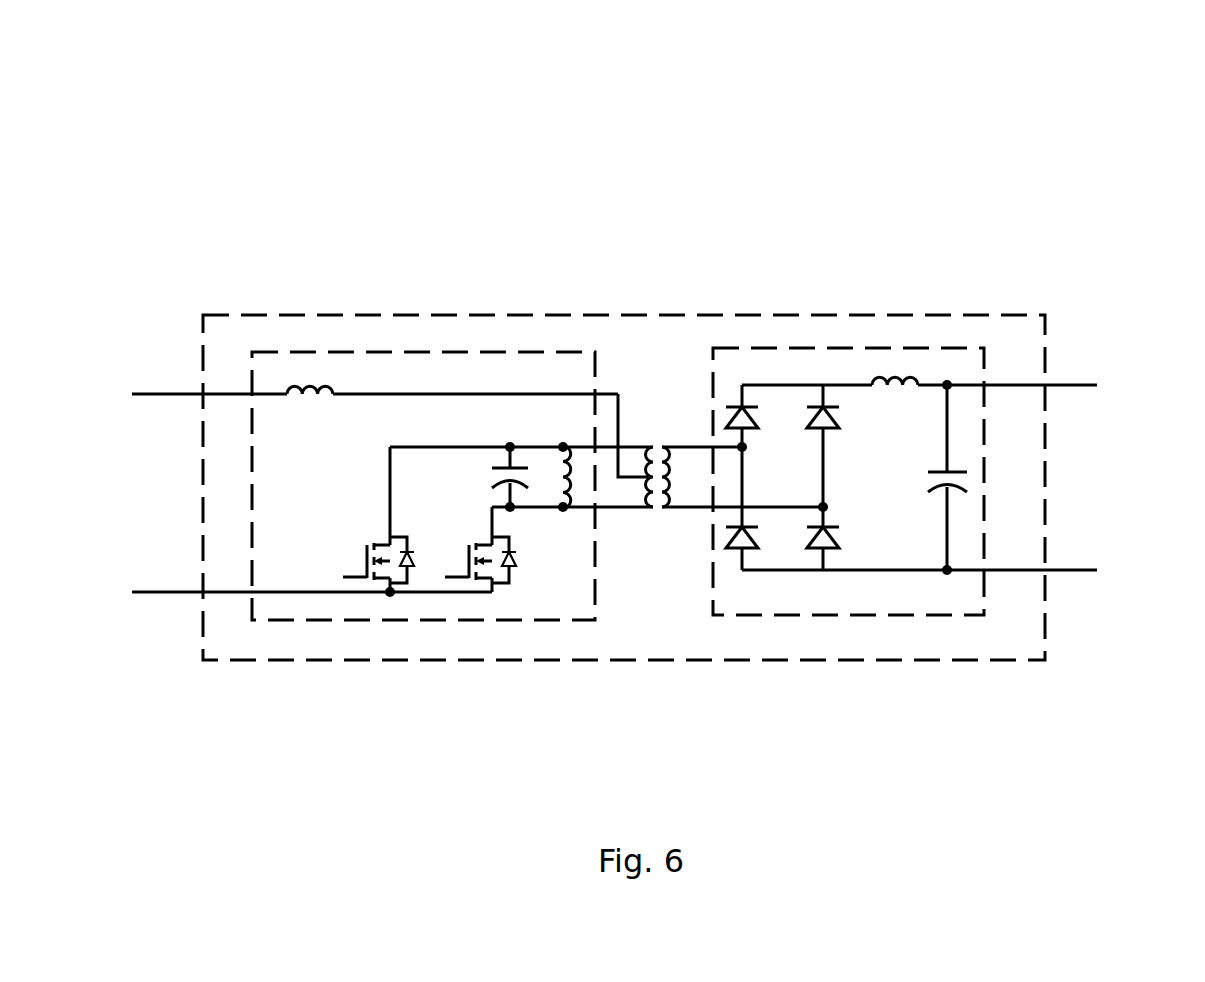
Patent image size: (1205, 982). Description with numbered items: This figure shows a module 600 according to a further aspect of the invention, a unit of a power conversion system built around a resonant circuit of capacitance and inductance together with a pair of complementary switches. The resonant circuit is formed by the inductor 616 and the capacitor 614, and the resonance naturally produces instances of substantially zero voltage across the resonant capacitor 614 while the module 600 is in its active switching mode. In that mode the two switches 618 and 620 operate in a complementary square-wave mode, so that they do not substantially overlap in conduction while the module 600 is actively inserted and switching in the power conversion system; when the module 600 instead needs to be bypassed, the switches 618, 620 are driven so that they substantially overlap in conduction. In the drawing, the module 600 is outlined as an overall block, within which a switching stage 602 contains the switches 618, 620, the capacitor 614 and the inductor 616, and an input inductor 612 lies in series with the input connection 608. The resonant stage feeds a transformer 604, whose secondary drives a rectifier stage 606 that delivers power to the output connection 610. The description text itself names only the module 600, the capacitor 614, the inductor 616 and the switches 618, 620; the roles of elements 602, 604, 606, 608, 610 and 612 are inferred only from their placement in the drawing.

The module 600 is at (288, 145).
The inverter stage 602 is at (372, 347).
The transformer 604 is at (658, 435).
The rectifier stage 606 is at (897, 347).
The input terminals 608 is at (125, 382).
The output terminals 610 is at (1097, 368).
The input inductor 612 is at (283, 383).
The capacitor 614 is at (502, 458).
The inductor 616 is at (577, 458).
The switch 618 is at (357, 583).
The switch 620 is at (468, 583).